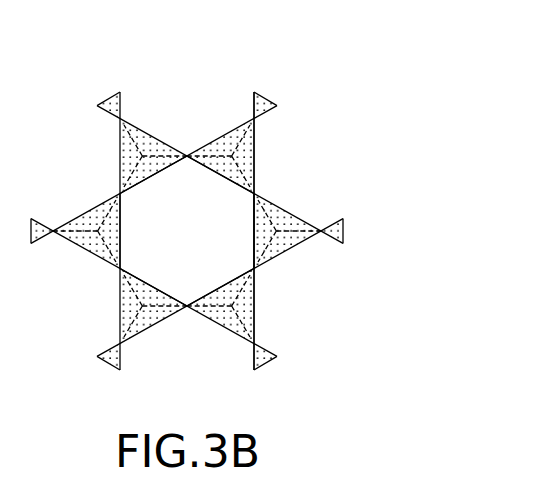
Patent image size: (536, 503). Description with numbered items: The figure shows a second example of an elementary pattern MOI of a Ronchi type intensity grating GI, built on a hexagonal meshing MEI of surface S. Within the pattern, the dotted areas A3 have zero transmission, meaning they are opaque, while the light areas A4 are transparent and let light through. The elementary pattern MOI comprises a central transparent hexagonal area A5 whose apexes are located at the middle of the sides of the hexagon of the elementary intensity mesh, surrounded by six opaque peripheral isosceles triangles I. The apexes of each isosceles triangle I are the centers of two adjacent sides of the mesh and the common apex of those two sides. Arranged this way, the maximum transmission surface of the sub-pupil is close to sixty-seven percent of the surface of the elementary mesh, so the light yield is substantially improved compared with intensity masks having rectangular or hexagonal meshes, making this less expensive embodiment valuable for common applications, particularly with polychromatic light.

The intensity grating GI is at (298, 97).
The dotted areas A3 is at (208, 147).
The light areas A4 is at (277, 158).
The central transparent hexagonal area A5 is at (172, 208).
The hexagonal meshing MEI is at (254, 193).
The elementary pattern MOI is at (187, 238).
The opaque peripheral isosceles triangles I is at (252, 297).